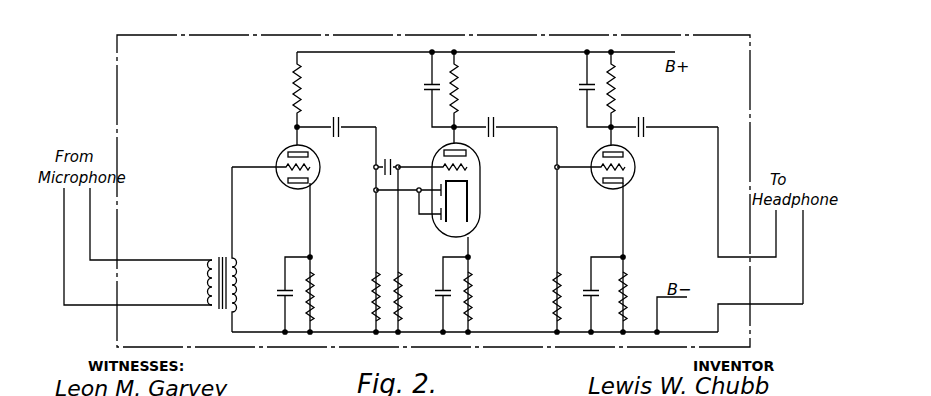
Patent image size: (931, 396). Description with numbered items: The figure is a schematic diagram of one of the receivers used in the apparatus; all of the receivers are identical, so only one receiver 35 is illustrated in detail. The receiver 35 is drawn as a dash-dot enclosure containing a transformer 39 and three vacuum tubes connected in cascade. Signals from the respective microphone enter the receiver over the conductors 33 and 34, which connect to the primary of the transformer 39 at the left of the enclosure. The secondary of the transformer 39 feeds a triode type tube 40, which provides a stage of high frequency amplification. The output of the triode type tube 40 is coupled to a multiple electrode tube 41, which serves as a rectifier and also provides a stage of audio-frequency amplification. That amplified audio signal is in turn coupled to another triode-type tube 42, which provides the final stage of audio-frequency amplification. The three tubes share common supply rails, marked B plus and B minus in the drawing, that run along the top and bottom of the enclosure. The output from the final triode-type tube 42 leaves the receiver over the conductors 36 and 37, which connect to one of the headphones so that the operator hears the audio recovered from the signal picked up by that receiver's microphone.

The conductor 33 is at (64, 228).
The conductor 34 is at (90, 228).
The receiver 35 is at (508, 34).
The conductor 36 is at (776, 238).
The conductor 37 is at (803, 237).
The transformer 39 is at (232, 258).
The triode type tube 40 is at (320, 170).
The multiple electrode tube 41 is at (478, 222).
The triode-type tube 42 is at (626, 183).